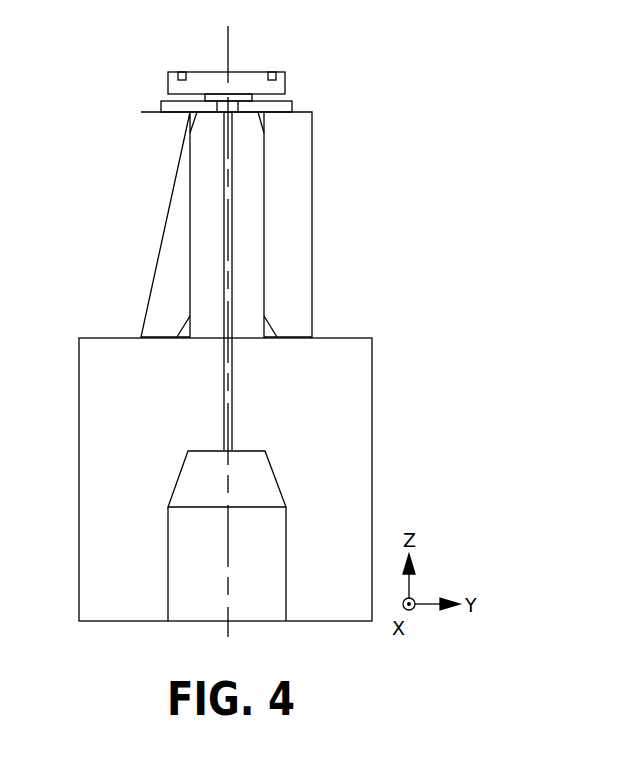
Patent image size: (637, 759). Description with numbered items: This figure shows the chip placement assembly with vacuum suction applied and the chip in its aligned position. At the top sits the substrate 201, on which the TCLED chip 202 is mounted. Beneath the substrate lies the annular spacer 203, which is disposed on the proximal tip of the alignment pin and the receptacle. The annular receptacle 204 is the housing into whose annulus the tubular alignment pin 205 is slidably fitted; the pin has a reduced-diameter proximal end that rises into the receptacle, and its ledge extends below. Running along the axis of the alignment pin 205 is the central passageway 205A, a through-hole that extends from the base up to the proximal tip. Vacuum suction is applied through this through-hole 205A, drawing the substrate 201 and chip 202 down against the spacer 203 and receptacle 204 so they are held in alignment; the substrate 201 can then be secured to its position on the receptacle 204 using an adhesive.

The substrate 201 is at (243, 80).
The TCLED chip 202 is at (252, 98).
The annular spacer 203 is at (269, 107).
The annular receptacle 204 is at (295, 197).
The central passageway 205A is at (233, 287).
The alignment pin 205 is at (357, 424).